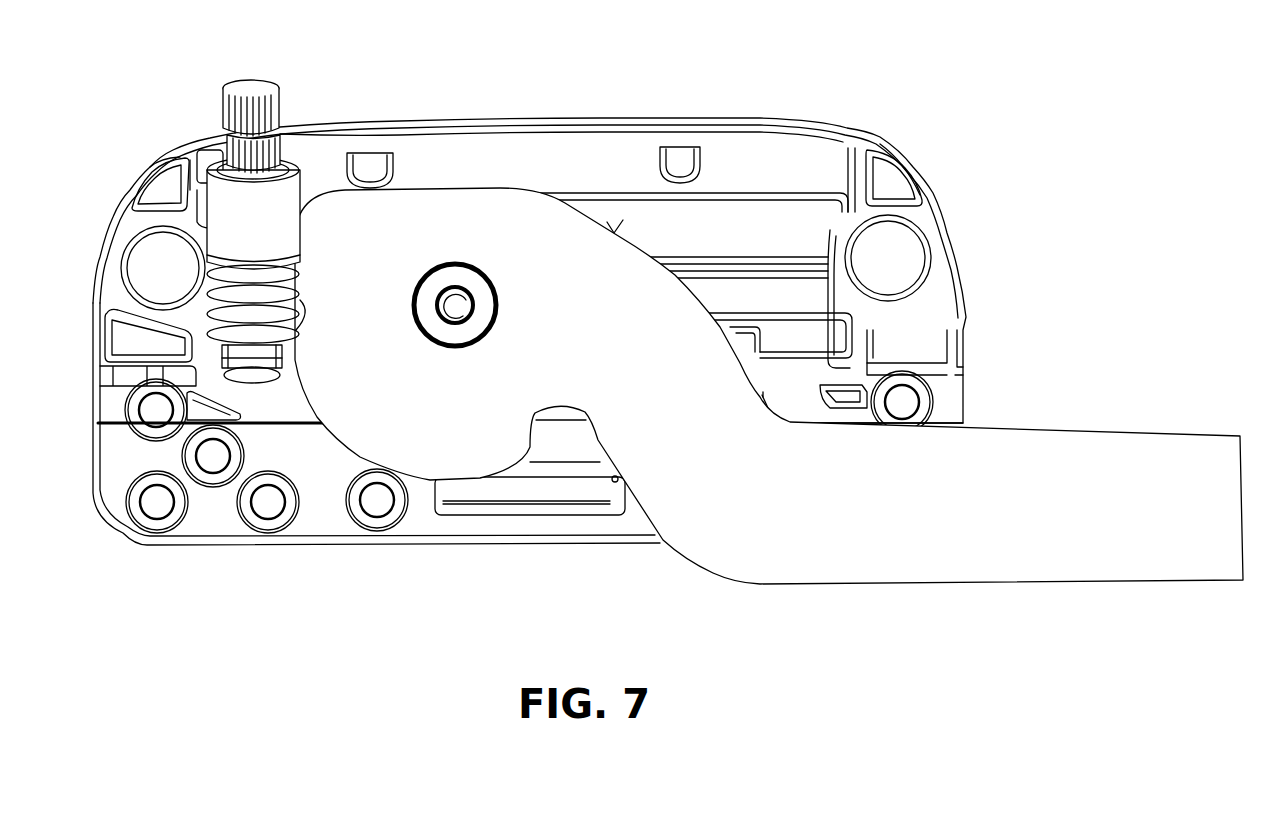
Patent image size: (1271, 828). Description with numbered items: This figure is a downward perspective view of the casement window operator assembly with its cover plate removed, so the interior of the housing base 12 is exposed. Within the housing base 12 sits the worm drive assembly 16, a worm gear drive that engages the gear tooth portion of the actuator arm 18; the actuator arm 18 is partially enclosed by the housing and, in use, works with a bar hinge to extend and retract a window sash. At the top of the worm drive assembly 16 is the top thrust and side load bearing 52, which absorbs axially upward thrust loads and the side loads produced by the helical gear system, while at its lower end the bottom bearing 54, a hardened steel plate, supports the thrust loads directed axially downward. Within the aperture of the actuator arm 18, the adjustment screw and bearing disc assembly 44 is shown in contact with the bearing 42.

The housing base 12 is at (430, 520).
The worm drive assembly 16 is at (232, 242).
The actuator arm 18 is at (848, 517).
The bearing 42 is at (451, 283).
The adjustment screw and bearing disc assembly 44 is at (455, 308).
The top thrust and side load bearing 52 is at (218, 165).
The bottom bearing 54 is at (262, 383).